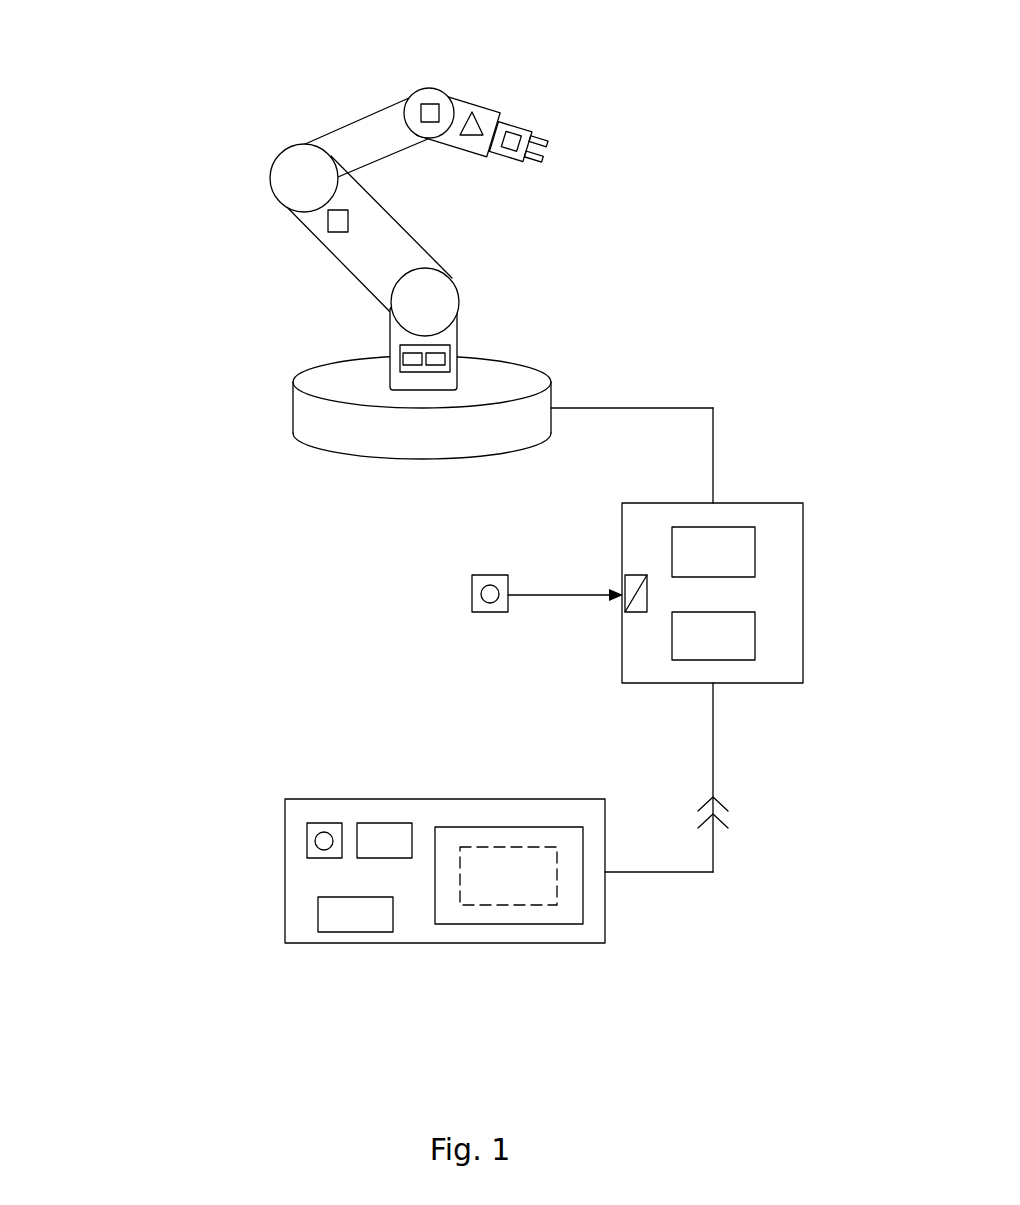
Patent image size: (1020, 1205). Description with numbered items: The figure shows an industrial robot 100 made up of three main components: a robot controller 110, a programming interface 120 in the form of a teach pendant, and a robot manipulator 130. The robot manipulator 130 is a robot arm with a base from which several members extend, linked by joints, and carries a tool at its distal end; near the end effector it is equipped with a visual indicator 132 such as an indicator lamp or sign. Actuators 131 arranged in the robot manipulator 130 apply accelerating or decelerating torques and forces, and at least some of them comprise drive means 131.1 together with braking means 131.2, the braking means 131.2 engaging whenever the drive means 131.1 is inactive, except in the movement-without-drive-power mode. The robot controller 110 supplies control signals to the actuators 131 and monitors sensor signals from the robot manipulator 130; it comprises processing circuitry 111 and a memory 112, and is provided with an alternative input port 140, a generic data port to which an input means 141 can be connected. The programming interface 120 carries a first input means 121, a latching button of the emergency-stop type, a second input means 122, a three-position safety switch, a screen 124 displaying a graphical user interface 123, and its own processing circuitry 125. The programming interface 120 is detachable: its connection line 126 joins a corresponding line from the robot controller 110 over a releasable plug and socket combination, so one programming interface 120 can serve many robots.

The industrial robot 100 is at (113, 103).
The robot controller 110 is at (721, 598).
The processing circuitry 111 is at (755, 637).
The memory 112 is at (755, 552).
The programming interface 120 is at (398, 881).
The first input means 121 is at (307, 840).
The second input means 122 is at (385, 823).
The graphical user interface 123 is at (538, 905).
The screen 124 is at (462, 924).
The processing circuitry 125 is at (357, 932).
The connection line 126 is at (713, 845).
The robot manipulator 130 is at (411, 231).
The actuators 131 is at (409, 269).
The drive means 131.1 is at (412, 372).
The braking means 131.2 is at (433, 372).
The visual indicator 132 is at (468, 103).
The alternative input port 140 is at (638, 612).
The input means 141 is at (472, 595).